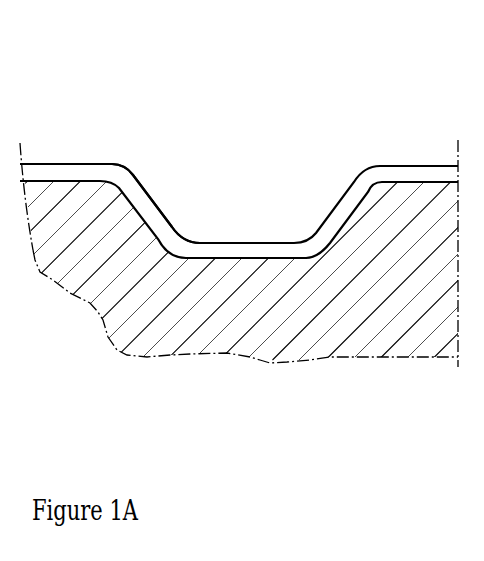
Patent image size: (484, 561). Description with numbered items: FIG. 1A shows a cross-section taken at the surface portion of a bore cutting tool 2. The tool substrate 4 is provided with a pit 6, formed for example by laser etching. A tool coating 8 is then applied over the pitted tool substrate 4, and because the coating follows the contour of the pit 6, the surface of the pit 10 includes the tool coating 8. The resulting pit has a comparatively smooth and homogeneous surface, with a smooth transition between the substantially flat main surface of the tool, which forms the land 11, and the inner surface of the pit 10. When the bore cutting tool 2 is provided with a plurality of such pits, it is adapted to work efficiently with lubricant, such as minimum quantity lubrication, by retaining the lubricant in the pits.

The bore cutting tool 2 is at (211, 93).
The tool substrate 4 is at (184, 305).
The pit 6 is at (307, 259).
The tool coating 8 is at (239, 233).
The surface of the pit 10 is at (136, 209).
The land 11 is at (423, 147).